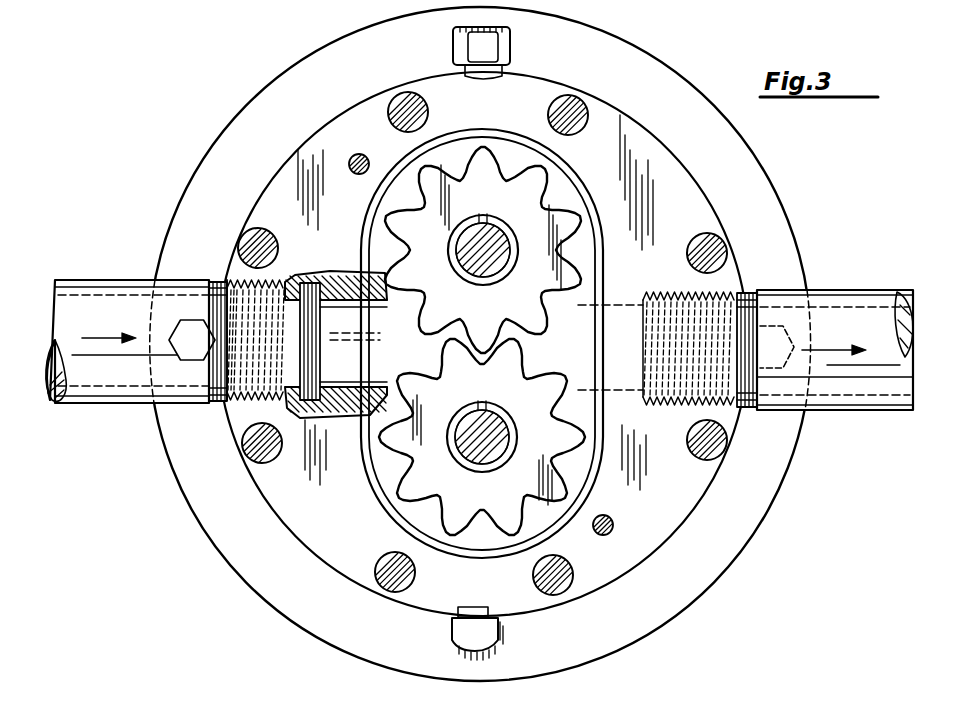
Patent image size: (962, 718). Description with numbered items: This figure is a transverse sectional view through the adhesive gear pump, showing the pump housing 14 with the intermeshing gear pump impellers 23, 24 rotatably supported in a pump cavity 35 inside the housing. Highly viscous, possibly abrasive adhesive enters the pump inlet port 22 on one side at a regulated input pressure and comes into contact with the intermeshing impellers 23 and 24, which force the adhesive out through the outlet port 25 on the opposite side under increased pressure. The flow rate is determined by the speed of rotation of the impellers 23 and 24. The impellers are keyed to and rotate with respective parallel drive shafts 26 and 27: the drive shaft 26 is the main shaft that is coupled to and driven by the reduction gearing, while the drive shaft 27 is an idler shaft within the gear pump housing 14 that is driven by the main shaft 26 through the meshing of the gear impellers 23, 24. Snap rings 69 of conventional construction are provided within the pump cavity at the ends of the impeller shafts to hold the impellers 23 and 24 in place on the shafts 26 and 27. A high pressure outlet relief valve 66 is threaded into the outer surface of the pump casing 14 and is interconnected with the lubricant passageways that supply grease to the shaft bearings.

The housing 14 is at (228, 128).
The high pressure outlet relief valve 66 is at (455, 44).
The pump cavity 35 is at (542, 358).
The gear pump impeller 24 is at (528, 210).
The gear pump impeller 23 is at (546, 450).
The snap ring 69 is at (455, 266).
The drive shaft 27 is at (470, 268).
The drive shaft 26 is at (457, 449).
The pump inlet port 22 is at (48, 388).
The outlet port 25 is at (897, 293).